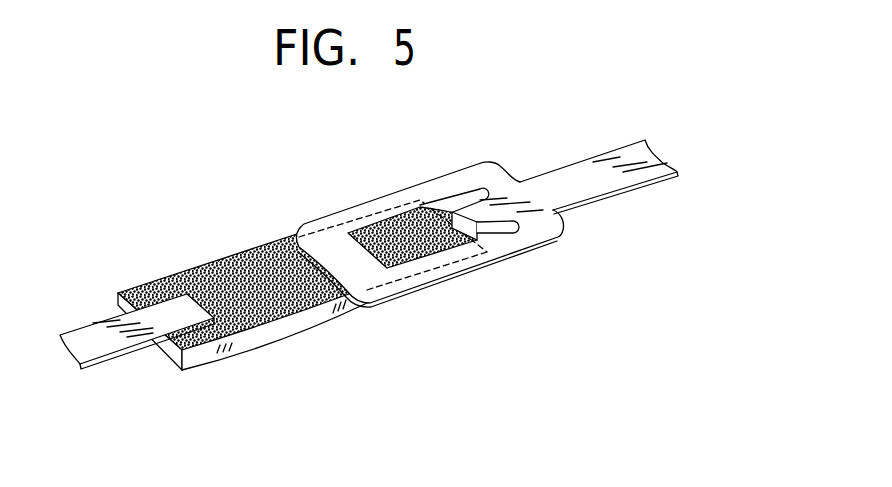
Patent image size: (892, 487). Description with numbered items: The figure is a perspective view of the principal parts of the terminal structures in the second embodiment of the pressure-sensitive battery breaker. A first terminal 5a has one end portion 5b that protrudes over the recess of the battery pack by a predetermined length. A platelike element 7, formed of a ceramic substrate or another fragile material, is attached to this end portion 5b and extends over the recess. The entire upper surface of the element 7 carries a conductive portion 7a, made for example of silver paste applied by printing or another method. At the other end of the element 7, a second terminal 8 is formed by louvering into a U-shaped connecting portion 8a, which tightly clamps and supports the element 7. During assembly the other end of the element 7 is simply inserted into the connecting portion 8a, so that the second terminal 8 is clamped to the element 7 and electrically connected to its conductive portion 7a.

The first terminal 5a is at (126, 292).
The end portion of the first terminal 5b is at (173, 310).
The platelike element 7 is at (309, 317).
The conductive portion 7a is at (262, 293).
The second terminal 8 is at (565, 150).
The U-shaped connecting portion 8a is at (443, 188).